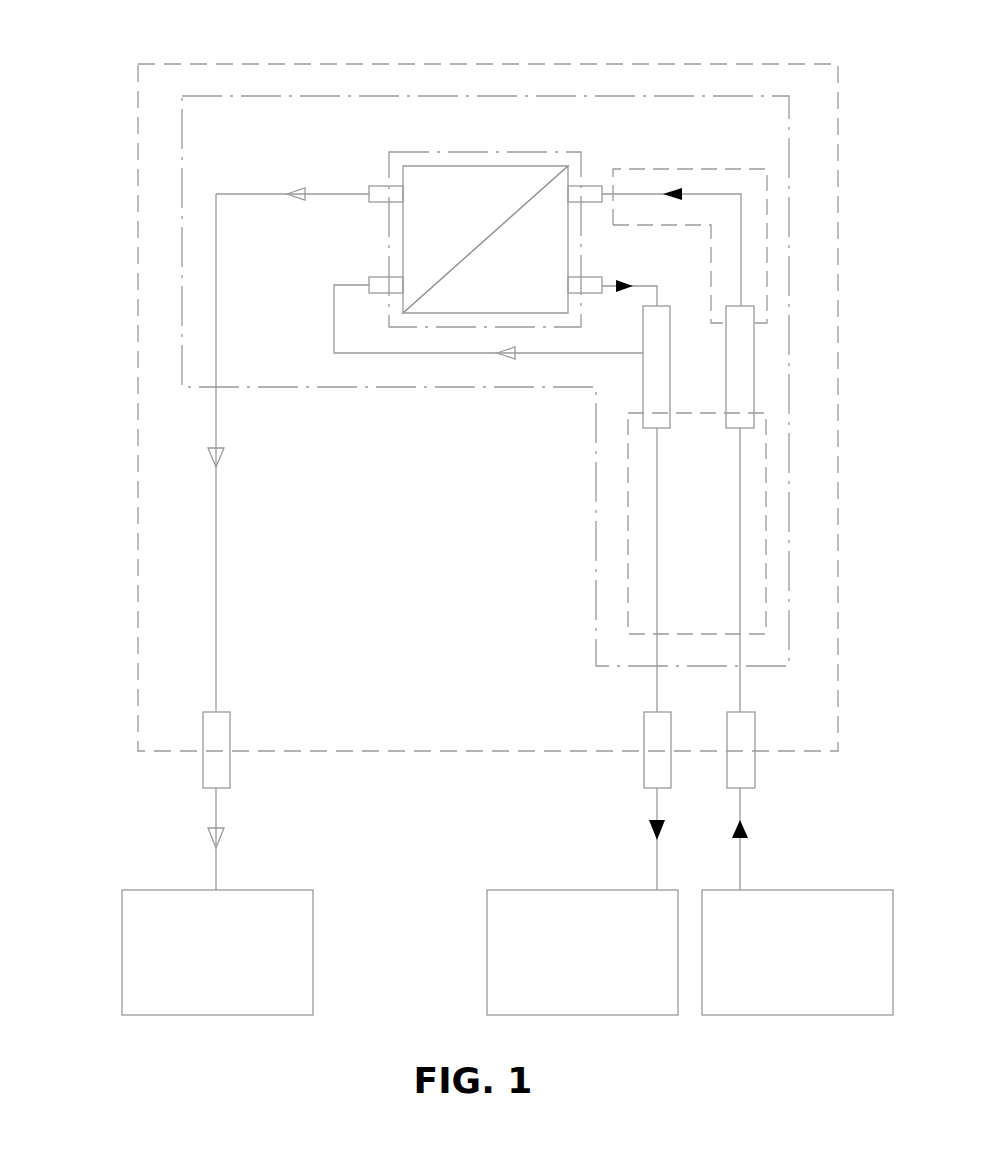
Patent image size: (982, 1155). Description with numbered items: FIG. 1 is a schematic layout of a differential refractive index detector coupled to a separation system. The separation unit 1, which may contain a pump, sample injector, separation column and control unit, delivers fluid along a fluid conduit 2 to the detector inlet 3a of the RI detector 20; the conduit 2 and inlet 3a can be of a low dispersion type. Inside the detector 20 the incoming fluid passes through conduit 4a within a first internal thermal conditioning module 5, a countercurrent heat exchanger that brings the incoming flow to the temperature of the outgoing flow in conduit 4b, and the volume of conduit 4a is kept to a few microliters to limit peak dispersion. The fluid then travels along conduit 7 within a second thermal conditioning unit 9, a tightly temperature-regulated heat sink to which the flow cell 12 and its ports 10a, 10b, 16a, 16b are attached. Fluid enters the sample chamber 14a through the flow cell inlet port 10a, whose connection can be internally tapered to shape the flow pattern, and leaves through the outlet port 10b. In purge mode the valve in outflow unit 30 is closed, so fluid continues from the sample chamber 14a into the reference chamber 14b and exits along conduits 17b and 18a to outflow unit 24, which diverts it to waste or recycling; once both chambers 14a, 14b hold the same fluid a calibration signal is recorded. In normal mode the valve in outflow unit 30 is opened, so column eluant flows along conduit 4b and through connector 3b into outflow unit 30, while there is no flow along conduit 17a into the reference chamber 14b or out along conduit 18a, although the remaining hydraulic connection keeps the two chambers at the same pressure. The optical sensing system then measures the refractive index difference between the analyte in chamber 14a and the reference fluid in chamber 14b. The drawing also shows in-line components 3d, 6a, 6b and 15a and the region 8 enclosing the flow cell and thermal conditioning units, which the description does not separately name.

The separation unit 1 is at (797, 952).
The fluid conduit 2 is at (742, 853).
The detector inlet 3a is at (757, 735).
The connector 3b is at (634, 726).
The valve 3d is at (197, 730).
The conduit 4a is at (743, 578).
The conduit 4b is at (655, 552).
The first internal thermal conditioning module 5 is at (768, 468).
The pump 6a is at (754, 353).
The pump 6b is at (642, 393).
The conduit 7 is at (741, 256).
The separation device 8 is at (791, 183).
The second thermal conditioning unit 9 is at (672, 167).
The flow cell inlet port 10a is at (587, 182).
The outlet port 10b is at (587, 297).
The flow cell 12 is at (388, 152).
The sample chamber 14a is at (485, 239).
The reference chamber 14b is at (485, 239).
The discharge line 15a is at (648, 286).
The inlet port 16a is at (382, 293).
The outlet port 16b is at (378, 202).
The conduit 17a is at (415, 357).
The conduit 17b is at (342, 195).
The conduit 18a is at (218, 573).
The RI detector 20 is at (712, 60).
The outflow unit 24 is at (217, 952).
The outflow unit 30 is at (582, 952).